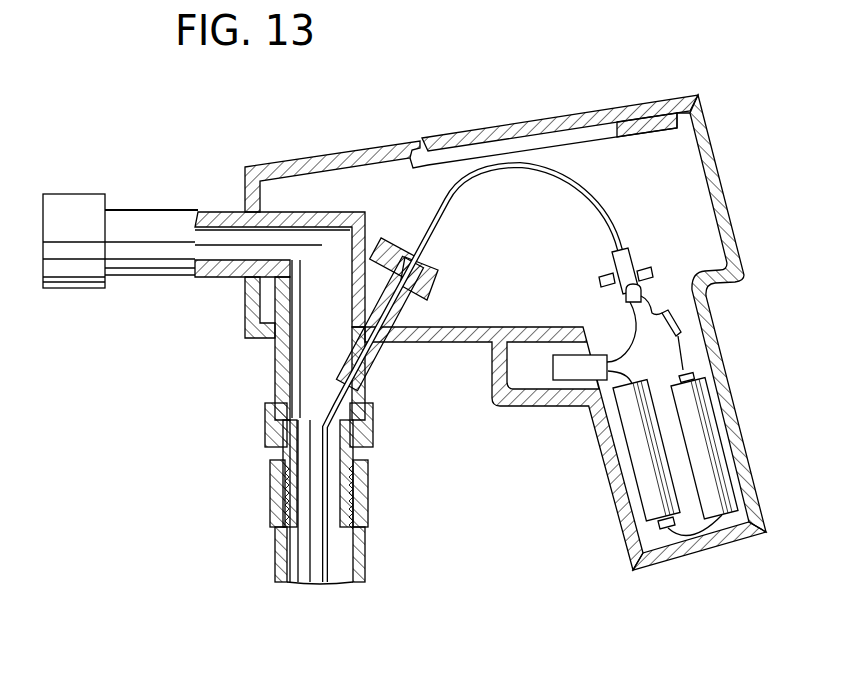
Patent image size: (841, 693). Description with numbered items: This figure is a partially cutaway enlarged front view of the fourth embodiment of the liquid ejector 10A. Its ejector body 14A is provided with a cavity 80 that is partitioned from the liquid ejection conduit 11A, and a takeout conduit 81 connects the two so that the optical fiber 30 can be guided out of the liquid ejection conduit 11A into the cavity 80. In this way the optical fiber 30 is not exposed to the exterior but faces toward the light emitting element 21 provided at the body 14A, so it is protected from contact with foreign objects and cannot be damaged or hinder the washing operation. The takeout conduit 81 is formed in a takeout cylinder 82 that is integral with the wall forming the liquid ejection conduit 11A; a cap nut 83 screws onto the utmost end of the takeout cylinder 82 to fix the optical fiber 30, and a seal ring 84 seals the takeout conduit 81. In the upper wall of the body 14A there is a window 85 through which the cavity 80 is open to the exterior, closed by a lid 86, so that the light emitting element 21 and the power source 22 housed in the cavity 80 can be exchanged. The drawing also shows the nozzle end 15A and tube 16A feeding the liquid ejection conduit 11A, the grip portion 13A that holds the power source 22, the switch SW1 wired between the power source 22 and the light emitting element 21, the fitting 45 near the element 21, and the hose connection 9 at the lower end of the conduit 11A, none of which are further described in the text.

The nozzle tip 15A is at (75, 200).
The nozzle tube 16A is at (158, 218).
The ejector body 14A is at (313, 165).
The liquid ejector 10A is at (400, 137).
The lid 86 is at (492, 139).
The window 85 is at (618, 118).
The cavity 80 is at (625, 178).
The connector 45 is at (650, 258).
The light emitting element 21 is at (640, 297).
The power source 22 is at (712, 427).
The grip handle 13A is at (745, 460).
The switch SW1 is at (565, 380).
The seal ring 84 is at (438, 282).
The cap nut 83 is at (390, 240).
The takeout cylinder 82 is at (383, 343).
The takeout conduit 81 is at (375, 365).
The liquid ejection conduit 11A is at (295, 350).
The optical fiber 30 is at (340, 385).
The hose fitting 9 is at (275, 540).